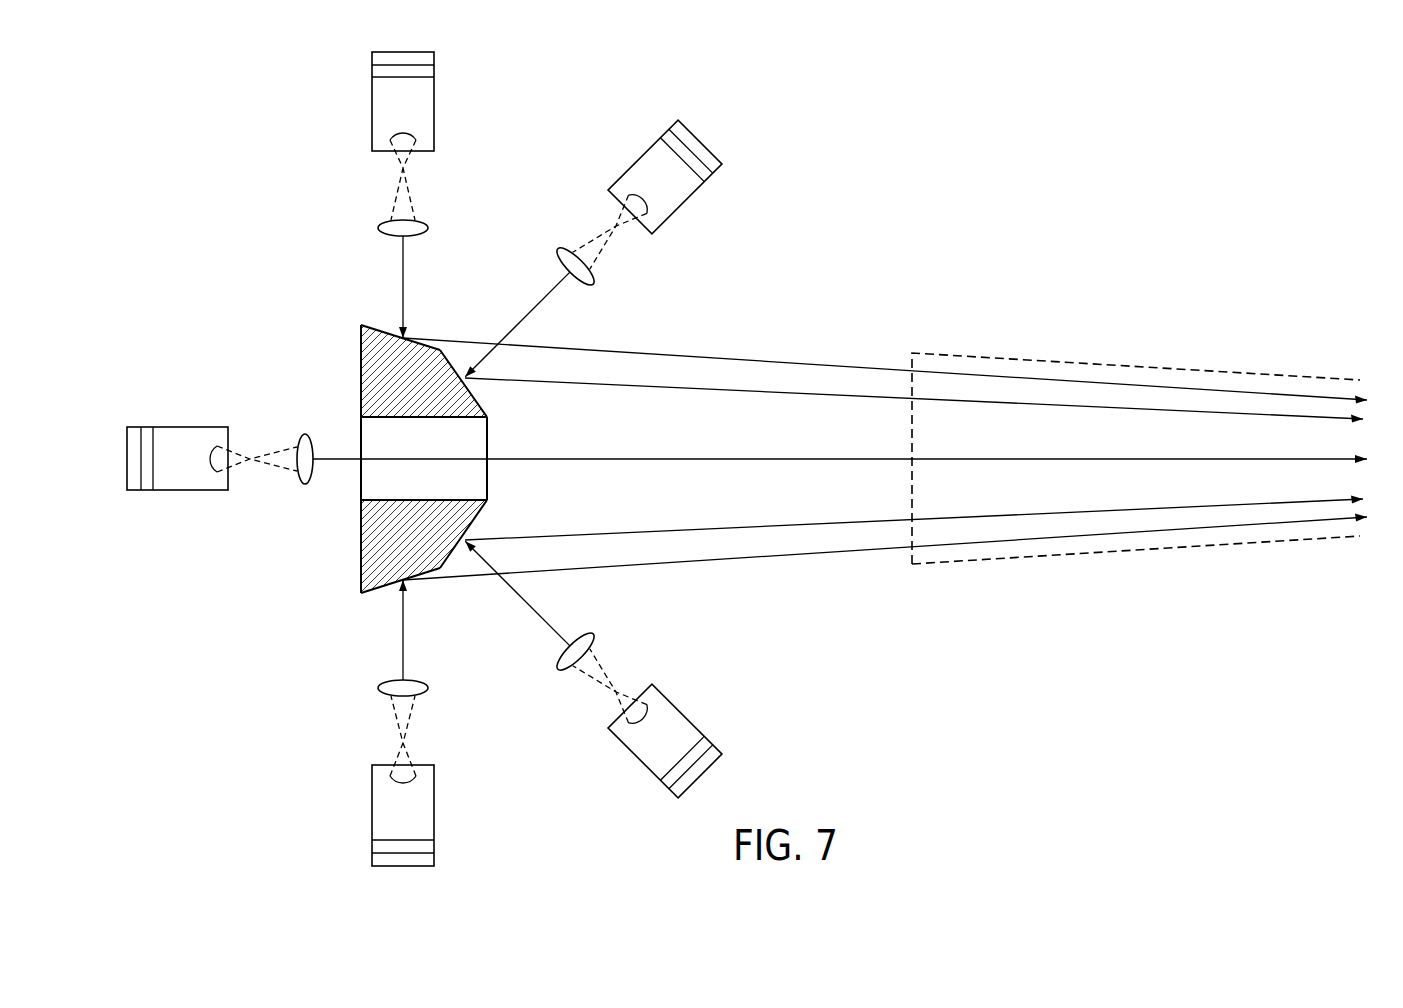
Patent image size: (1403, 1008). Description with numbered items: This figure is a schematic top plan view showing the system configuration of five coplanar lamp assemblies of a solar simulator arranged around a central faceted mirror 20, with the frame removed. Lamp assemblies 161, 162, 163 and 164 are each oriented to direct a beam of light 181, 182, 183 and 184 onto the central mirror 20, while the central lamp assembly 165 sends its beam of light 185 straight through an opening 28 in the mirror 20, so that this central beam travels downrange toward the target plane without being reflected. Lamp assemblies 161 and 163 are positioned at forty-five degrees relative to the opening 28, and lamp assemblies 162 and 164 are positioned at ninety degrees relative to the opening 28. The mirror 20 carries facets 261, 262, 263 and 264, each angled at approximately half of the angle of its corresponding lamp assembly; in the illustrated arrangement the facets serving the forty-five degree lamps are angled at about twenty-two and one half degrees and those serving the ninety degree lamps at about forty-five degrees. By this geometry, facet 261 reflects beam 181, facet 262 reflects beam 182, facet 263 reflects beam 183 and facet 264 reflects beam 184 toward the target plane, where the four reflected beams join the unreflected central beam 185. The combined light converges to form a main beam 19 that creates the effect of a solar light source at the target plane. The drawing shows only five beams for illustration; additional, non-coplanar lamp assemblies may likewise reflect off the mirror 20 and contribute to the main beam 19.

The central faceted mirror 20 is at (326, 565).
The facet 264 is at (375, 324).
The facet 263 is at (488, 404).
The opening 28 is at (478, 436).
The facet 261 is at (482, 513).
The facet 262 is at (375, 595).
The central lamp assembly 165 is at (192, 427).
The lamp assembly 164 is at (372, 105).
The lamp assembly 162 is at (372, 811).
The lamp assembly 163 is at (643, 156).
The lamp assembly 161 is at (650, 770).
The beam of light 184 is at (884, 367).
The beam of light 183 is at (990, 406).
The central beam of light 185 is at (1115, 458).
The beam of light 181 is at (990, 512).
The beam of light 182 is at (884, 556).
The main beam 19 is at (1117, 365).